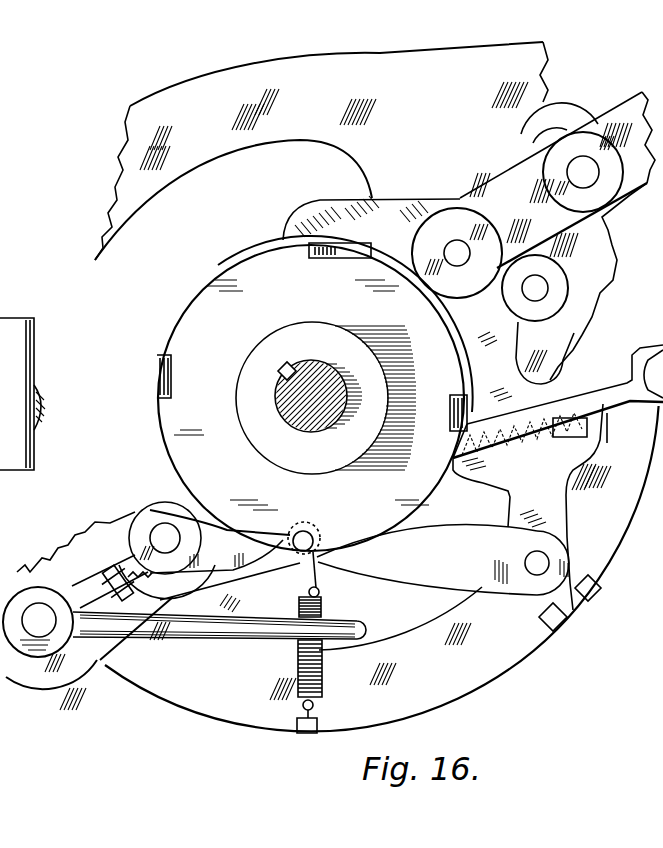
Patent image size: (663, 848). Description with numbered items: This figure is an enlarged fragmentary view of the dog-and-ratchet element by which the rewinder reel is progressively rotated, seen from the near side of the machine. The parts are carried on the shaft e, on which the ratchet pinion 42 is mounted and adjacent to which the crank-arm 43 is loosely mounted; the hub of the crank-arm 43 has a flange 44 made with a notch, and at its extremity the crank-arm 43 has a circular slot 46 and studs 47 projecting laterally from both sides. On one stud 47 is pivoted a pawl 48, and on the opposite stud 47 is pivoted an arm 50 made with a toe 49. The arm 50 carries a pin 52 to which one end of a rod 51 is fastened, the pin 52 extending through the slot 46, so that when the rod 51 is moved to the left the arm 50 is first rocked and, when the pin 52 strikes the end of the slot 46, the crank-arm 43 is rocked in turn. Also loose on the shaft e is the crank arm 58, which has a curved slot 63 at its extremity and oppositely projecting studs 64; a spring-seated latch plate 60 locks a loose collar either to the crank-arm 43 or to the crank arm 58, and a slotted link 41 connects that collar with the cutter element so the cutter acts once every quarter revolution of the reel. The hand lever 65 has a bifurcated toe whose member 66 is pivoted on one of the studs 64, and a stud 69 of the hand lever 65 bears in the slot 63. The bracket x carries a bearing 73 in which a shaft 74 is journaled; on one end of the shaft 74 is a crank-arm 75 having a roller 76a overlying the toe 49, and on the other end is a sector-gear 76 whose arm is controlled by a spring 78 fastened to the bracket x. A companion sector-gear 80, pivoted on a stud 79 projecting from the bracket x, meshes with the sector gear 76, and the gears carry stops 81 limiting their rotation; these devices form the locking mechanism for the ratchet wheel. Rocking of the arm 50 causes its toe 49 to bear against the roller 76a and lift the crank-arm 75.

The slotted link 41 is at (602, 388).
The ratchet pinion 42 is at (232, 398).
The crank-arm 43 is at (102, 660).
The flange 44 is at (160, 366).
The circular slot 46 is at (68, 645).
The studs 47 is at (163, 538).
The pawl 48 is at (209, 538).
The toe 49 is at (287, 580).
The arm 50 is at (42, 573).
The rod 51 is at (250, 627).
The pin 52 is at (40, 628).
The crank arm 58 is at (547, 118).
The latch plate 60 is at (270, 243).
The curved slot 63 is at (547, 133).
The studs 64 is at (455, 258).
The hand lever 65 is at (640, 177).
The toe-member 66 is at (335, 208).
The stud 69 is at (593, 177).
The bearing 73 is at (570, 600).
The shaft 74 is at (535, 575).
The crank-arm 75 is at (443, 560).
The sector-gear 76 is at (528, 507).
The roller 76a is at (313, 553).
The spring 78 is at (323, 670).
The stud 79 is at (540, 290).
The companion sector-gear 80 is at (562, 292).
The stops 81 is at (607, 423).
The shaft e is at (277, 407).
The bracket x is at (200, 727).